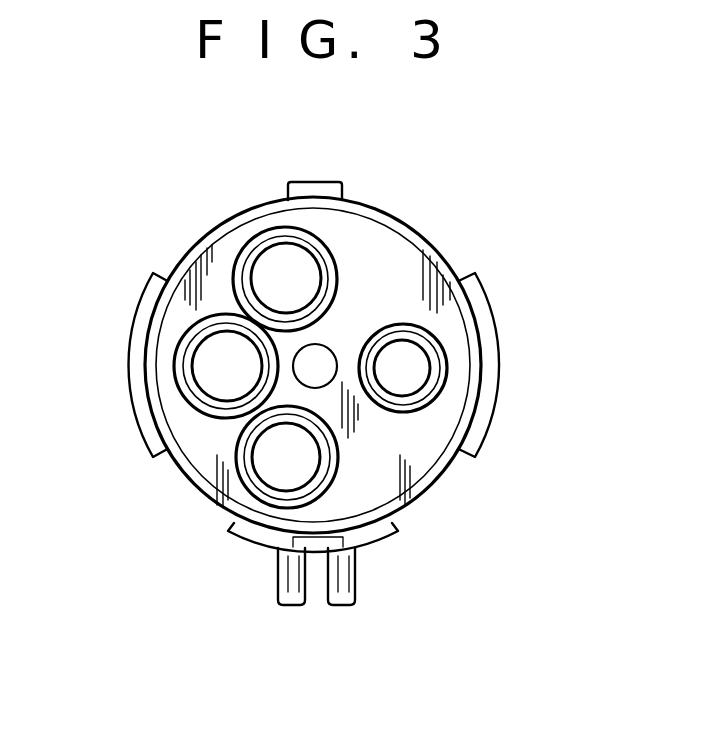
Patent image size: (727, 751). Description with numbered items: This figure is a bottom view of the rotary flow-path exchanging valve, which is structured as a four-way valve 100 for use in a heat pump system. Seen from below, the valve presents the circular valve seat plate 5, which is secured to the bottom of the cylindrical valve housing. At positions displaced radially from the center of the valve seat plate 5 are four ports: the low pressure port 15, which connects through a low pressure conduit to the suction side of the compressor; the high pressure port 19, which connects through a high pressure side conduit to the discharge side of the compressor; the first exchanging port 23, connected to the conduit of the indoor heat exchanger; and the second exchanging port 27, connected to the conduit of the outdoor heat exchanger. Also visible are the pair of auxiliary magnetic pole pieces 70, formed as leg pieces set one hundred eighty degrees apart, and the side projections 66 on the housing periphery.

The four-way valve 100 is at (432, 203).
The valve seat plate 5 is at (405, 478).
The side key tabs 66 is at (138, 335).
The auxiliary magnetic pole pieces 70 is at (316, 181).
The low pressure port 15 is at (200, 377).
The high pressure port 19 is at (422, 375).
The first exchanging port 23 is at (271, 246).
The second exchanging port 27 is at (262, 465).